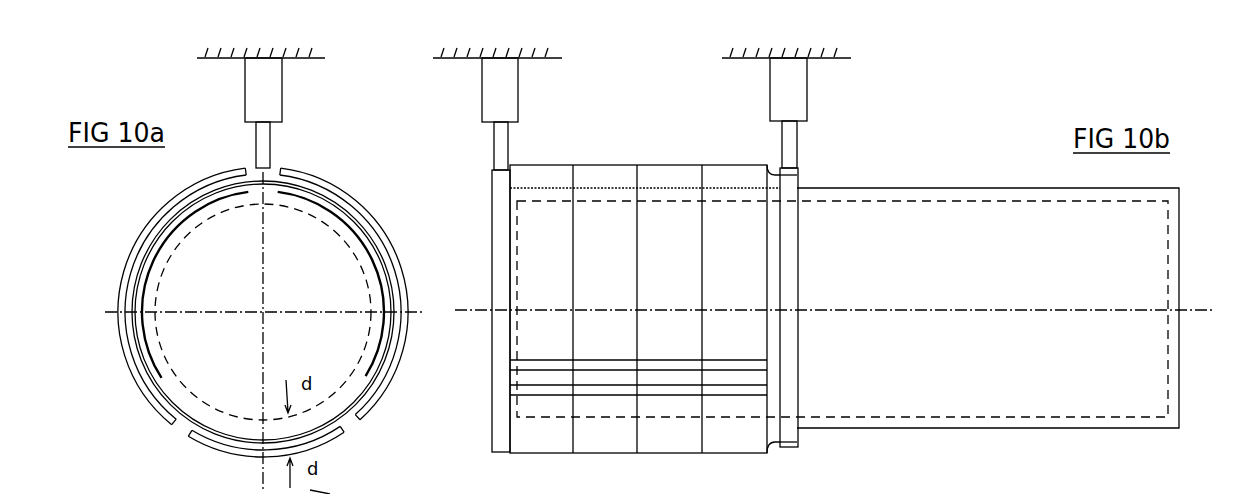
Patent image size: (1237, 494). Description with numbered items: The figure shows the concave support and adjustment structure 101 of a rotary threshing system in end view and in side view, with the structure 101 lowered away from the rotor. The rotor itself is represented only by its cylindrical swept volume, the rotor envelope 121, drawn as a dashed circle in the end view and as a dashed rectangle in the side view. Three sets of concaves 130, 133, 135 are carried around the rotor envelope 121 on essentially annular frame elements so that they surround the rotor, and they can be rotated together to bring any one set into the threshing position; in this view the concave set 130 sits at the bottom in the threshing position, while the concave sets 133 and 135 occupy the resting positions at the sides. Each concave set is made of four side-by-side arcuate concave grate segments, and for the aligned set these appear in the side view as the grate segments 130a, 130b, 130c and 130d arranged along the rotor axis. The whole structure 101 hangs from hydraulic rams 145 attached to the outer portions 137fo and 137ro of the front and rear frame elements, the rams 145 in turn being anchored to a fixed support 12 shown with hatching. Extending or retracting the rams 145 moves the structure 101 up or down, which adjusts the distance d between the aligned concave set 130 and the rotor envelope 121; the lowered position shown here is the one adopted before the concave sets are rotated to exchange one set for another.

In FIG. 10A, the fixed support / ground 12 is at (305, 46).
In FIG. 10B, the fixed support / ground 12 is at (735, 48).
In FIG. 10A, the hydraulic ram 145 is at (268, 102).
In FIG. 10B, the hydraulic ram 145 is at (505, 98).
In FIG. 10A, the concave set 133 is at (145, 227).
In FIG. 10A, the concave set 135 is at (392, 243).
In FIG. 10A, the rotor envelope 121 is at (168, 380).
In FIG. 10B, the rotor envelope 121 is at (1137, 420).
In FIG. 10A, the concave set 130 is at (358, 422).
In FIG. 10B, the outer portion of front frame element 137fo is at (492, 172).
In FIG. 10B, the outer portion of rear frame element 137ro is at (800, 172).
In FIG. 10B, the concave grate segment 130a is at (560, 412).
In FIG. 10B, the concave grate segment 130b is at (615, 411).
In FIG. 10B, the concave grate segment 130c is at (680, 435).
In FIG. 10B, the concave grate segment 130d is at (748, 452).
In FIG. 10B, the concave support and adjustment structure 101 is at (828, 454).